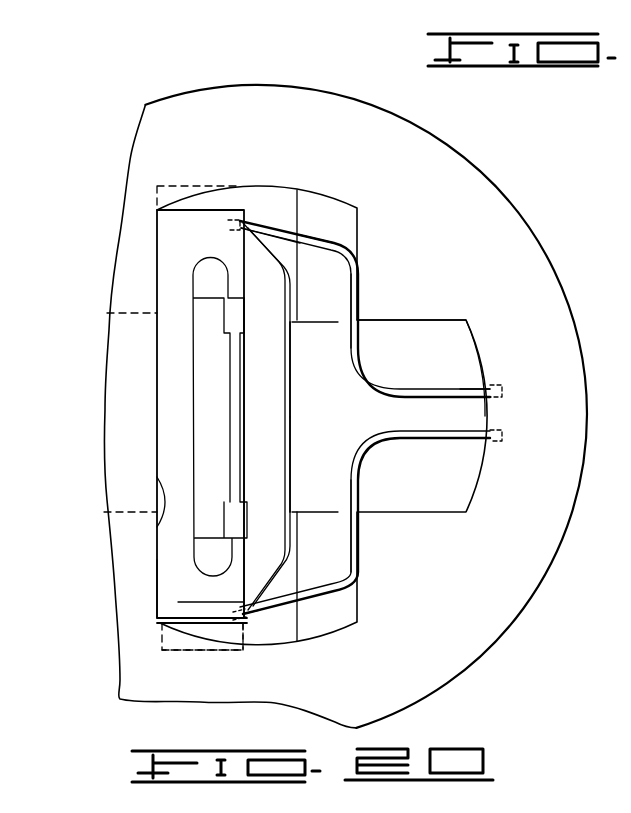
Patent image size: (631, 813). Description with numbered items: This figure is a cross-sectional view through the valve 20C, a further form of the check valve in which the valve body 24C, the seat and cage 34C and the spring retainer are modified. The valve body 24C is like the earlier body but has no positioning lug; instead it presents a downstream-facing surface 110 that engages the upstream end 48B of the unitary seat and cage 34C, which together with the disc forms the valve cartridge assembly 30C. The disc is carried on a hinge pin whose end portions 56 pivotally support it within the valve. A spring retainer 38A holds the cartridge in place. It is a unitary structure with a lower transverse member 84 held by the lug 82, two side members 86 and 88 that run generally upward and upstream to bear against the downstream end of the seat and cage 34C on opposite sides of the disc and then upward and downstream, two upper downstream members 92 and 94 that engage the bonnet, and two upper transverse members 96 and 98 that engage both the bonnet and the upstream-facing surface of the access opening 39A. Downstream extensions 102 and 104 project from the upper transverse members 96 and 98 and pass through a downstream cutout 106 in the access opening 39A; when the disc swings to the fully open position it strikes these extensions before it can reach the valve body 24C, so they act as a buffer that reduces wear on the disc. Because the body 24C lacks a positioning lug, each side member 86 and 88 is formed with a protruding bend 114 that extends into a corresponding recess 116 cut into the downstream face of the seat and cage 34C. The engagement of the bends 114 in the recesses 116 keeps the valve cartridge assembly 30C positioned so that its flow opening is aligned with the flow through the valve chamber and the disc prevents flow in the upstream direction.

The valve 20C is at (221, 76).
The valve body 24C is at (138, 257).
The valve cartridge assembly 30C is at (247, 206).
The seat and cage 34C is at (197, 207).
The end portions 56 is at (214, 270).
The spring retainer 38A is at (347, 247).
The side member 86 is at (270, 243).
The upper downstream member 92 is at (298, 235).
The upper transverse member 96 is at (352, 290).
The lug 82 is at (317, 387).
The downstream cutout 106 is at (438, 345).
The downstream extension 102 is at (455, 383).
The downstream extension 104 is at (450, 440).
The upper transverse member 98 is at (358, 490).
The lower transverse member 84 is at (293, 527).
The upper downstream member 94 is at (312, 597).
The side member 88 is at (244, 626).
The recess 116 is at (227, 635).
The protruding bend 114 is at (245, 655).
The access opening 39A is at (260, 423).
The upstream end 48B is at (160, 482).
The downstream-facing surface 110 is at (157, 562).